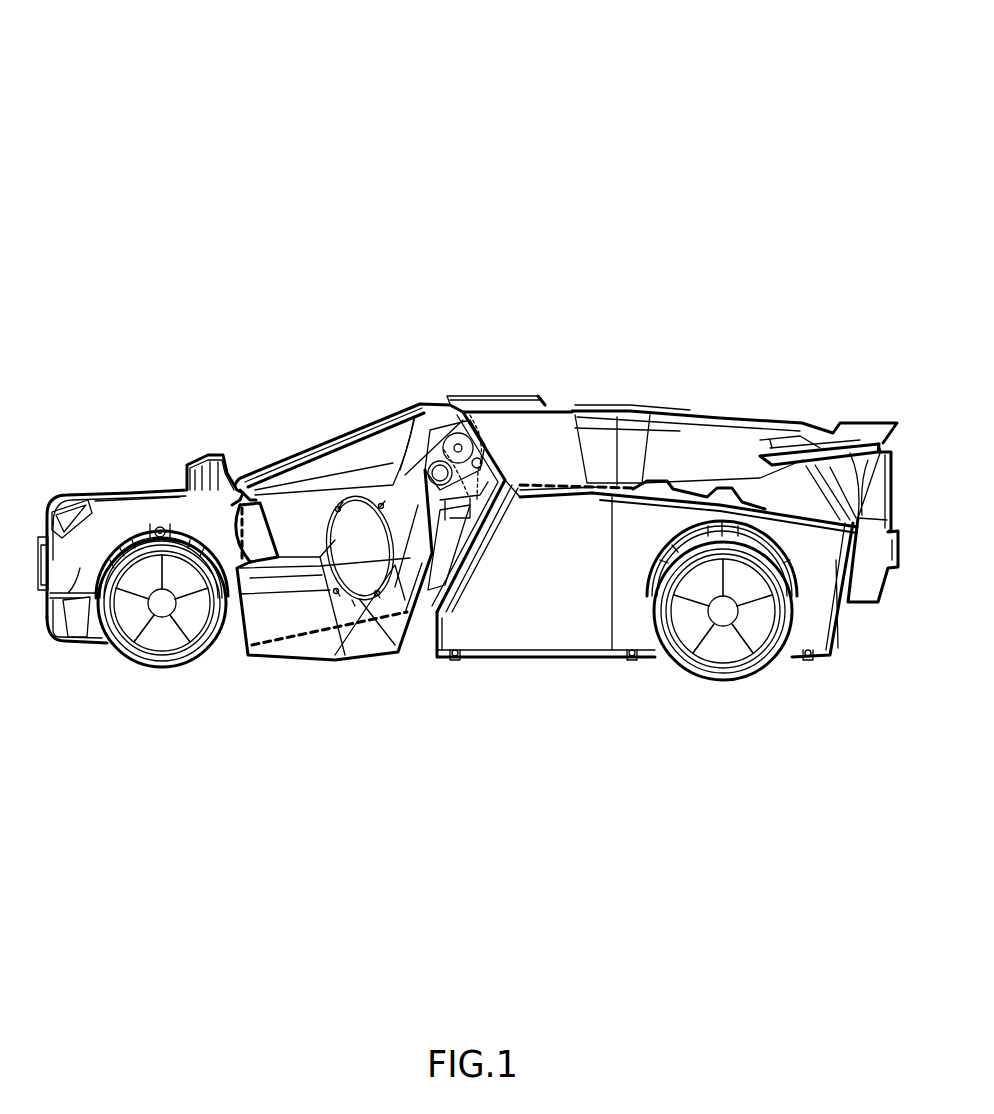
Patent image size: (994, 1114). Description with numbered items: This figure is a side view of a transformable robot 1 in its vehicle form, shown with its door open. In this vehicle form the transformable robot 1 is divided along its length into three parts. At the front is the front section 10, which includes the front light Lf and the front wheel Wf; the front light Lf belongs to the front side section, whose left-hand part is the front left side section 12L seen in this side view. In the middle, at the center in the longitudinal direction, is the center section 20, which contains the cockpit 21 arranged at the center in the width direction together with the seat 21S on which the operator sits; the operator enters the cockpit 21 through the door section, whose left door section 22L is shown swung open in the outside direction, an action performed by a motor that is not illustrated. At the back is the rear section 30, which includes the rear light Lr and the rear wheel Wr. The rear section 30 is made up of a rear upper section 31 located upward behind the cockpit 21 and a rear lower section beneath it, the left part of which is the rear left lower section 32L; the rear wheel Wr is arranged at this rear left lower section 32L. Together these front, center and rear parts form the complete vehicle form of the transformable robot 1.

The transformable robot 1 is at (130, 137).
The front section 10 is at (147, 412).
The front light Lf is at (58, 493).
The front left side section 12L is at (63, 640).
The front wheel Wf is at (120, 666).
The center section 20 is at (342, 378).
The cockpit 21 is at (440, 404).
The seat 21S is at (465, 400).
The left door section 22L is at (302, 590).
The rear section 30 is at (608, 356).
The rear upper section 31 is at (683, 457).
The rear light Lr is at (895, 475).
The rear left lower section 32L is at (545, 585).
The rear wheel Wr is at (698, 630).